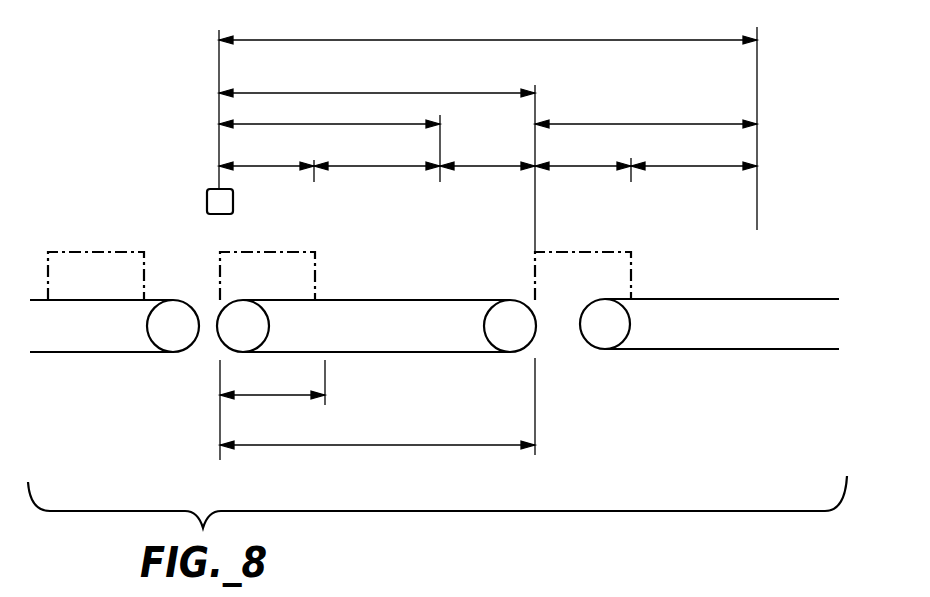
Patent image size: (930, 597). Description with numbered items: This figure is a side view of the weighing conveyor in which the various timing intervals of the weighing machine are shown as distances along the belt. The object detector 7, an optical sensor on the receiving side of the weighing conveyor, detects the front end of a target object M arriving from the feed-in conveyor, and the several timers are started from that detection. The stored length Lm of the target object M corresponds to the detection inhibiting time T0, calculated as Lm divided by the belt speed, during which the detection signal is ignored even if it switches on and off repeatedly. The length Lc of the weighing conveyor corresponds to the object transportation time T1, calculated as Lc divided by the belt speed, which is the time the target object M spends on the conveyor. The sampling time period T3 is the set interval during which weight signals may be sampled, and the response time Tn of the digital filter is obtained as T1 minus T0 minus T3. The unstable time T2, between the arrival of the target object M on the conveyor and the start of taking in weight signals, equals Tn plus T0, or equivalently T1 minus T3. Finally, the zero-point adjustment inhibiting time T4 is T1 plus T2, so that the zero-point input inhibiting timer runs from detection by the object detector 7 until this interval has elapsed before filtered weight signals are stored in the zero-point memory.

The object detector 7 is at (212, 189).
The target object M is at (147, 287).
The zero-point adjustment inhibiting time T4 is at (488, 26).
The object transportation time T1 is at (377, 80).
The unstable time T2 is at (488, 113).
The detection inhibiting time T0 is at (425, 155).
The response time of the digital filter Tn is at (535, 155).
The sampling time period T3 is at (487, 155).
The length of the target object Lm is at (272, 386).
The length of the weighing conveyor Lc is at (377, 435).